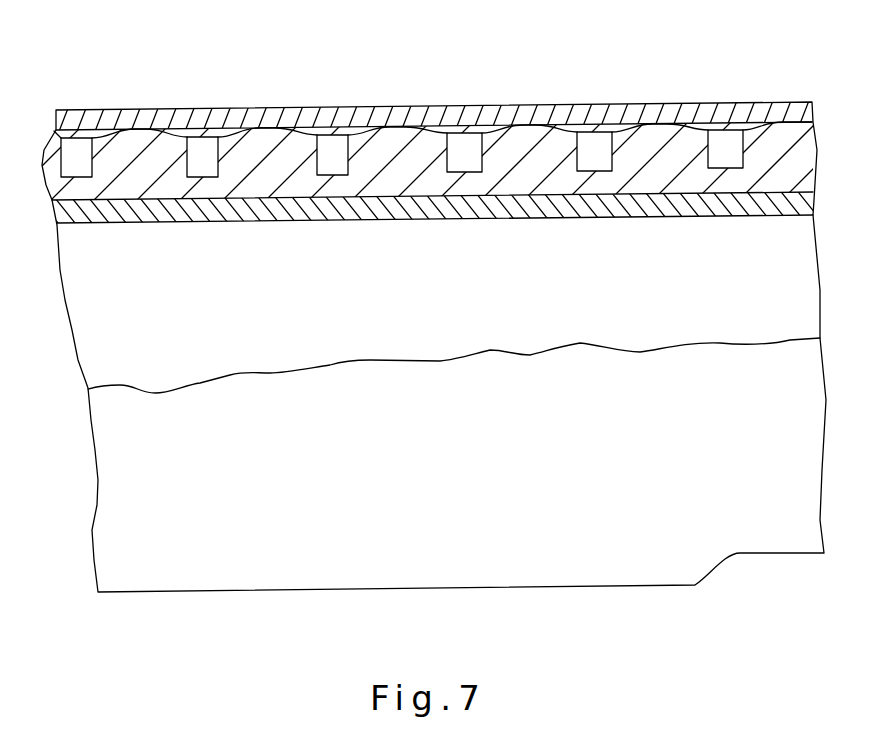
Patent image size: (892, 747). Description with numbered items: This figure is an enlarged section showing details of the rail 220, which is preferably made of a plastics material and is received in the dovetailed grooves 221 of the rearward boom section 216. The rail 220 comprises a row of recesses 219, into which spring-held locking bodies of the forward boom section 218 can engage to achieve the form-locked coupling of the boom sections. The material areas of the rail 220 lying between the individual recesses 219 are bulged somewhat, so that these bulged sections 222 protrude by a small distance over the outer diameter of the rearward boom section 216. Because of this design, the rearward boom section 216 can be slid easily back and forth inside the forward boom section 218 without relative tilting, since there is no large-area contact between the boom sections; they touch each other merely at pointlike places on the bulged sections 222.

The rearward boom section 216 is at (712, 207).
The forward boom section 218 is at (746, 103).
The recesses 219 is at (212, 167).
The rail 220 is at (275, 183).
The dovetailed grooves 221 is at (336, 200).
The bulged sections 222 is at (527, 143).